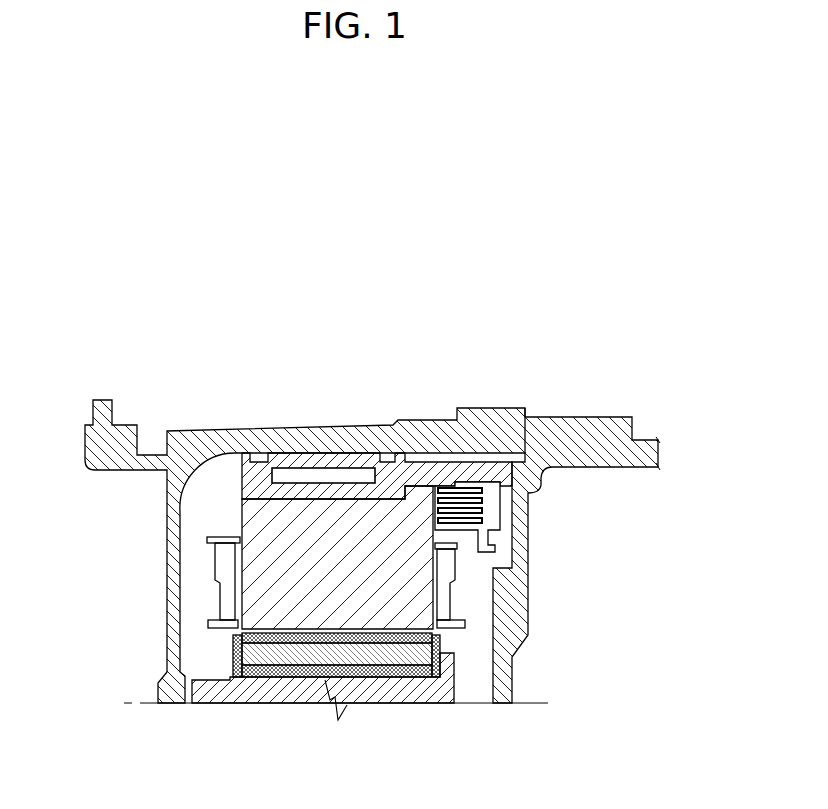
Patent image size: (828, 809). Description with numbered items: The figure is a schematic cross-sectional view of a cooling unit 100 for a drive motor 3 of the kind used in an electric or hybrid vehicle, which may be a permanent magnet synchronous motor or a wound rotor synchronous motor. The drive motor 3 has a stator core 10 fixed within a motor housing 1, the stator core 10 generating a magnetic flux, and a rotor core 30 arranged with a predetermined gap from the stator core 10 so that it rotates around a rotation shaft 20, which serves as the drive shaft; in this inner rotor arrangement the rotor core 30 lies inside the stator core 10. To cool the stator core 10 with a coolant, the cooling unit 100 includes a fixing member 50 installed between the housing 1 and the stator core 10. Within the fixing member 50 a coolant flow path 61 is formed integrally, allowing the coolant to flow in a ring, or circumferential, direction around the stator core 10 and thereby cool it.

The cooling unit 100 is at (352, 303).
The motor housing 1 is at (280, 431).
The drive motor 3 is at (237, 525).
The stator core 10 is at (252, 572).
The rotation shaft 20 is at (281, 696).
The rotor core 30 is at (393, 643).
The fixing member 50 is at (355, 506).
The coolant flow path 61 is at (323, 470).